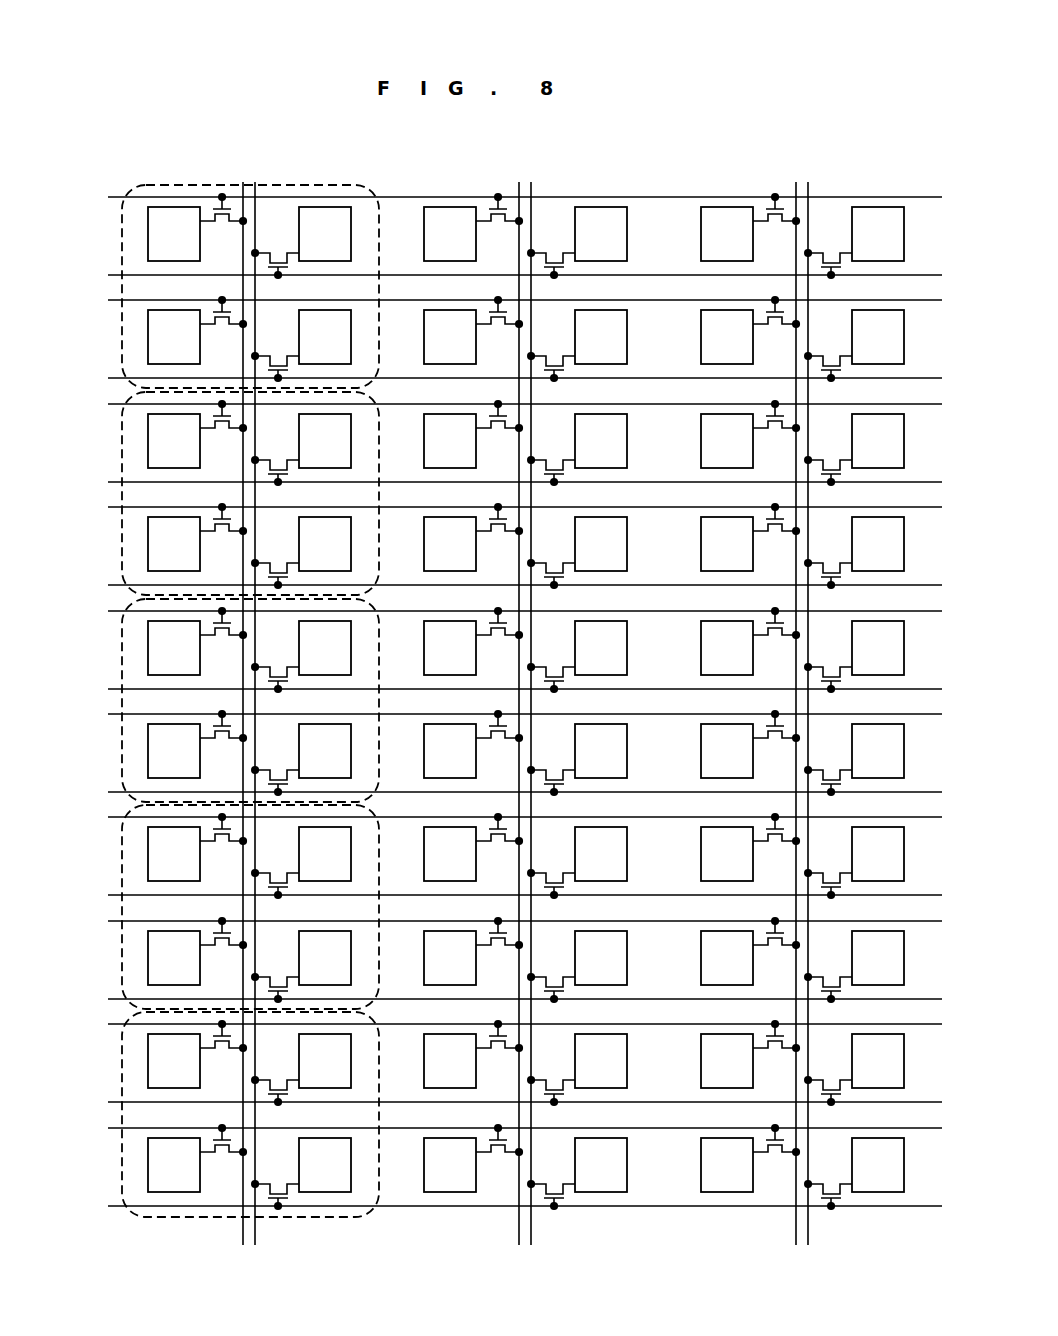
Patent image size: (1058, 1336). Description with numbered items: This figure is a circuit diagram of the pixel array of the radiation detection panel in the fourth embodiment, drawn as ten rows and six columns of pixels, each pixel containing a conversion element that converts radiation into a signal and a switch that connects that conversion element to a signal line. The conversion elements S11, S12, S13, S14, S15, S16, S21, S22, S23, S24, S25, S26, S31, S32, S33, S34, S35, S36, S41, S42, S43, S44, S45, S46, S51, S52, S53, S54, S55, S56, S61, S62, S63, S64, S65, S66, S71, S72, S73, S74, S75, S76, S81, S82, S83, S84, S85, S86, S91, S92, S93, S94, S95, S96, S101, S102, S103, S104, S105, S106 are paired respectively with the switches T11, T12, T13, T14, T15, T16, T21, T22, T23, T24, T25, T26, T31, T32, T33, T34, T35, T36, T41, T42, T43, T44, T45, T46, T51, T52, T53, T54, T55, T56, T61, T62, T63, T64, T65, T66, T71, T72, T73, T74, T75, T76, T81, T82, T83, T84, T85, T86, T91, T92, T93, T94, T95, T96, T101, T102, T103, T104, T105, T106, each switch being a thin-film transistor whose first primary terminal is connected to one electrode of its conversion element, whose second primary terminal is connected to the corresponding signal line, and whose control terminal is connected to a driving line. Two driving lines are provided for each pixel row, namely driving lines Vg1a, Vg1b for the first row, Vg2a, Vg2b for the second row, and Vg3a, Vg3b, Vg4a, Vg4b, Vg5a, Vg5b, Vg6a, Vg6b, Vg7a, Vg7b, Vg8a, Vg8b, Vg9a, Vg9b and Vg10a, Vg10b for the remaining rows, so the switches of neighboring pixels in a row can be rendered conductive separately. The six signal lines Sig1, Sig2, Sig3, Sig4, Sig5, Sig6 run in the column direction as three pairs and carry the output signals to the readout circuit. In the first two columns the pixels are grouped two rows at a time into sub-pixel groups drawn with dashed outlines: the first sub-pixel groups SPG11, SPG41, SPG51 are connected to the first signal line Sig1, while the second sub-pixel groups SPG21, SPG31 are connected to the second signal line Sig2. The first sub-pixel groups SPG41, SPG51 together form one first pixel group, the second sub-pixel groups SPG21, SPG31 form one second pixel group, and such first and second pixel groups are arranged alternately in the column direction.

The conversion element S11 is at (174, 234).
The conversion element S12 is at (325, 234).
The conversion element S13 is at (450, 234).
The conversion element S14 is at (601, 234).
The conversion element S15 is at (727, 234).
The conversion element S16 is at (878, 234).
The conversion element S21 is at (174, 337).
The conversion element S22 is at (325, 337).
The conversion element S23 is at (450, 337).
The conversion element S24 is at (601, 337).
The conversion element S25 is at (727, 337).
The conversion element S26 is at (878, 337).
The conversion element S31 is at (174, 441).
The conversion element S32 is at (325, 441).
The conversion element S33 is at (450, 441).
The conversion element S34 is at (601, 441).
The conversion element S35 is at (727, 441).
The conversion element S36 is at (878, 441).
The conversion element S41 is at (174, 544).
The conversion element S42 is at (325, 544).
The conversion element S43 is at (450, 544).
The conversion element S44 is at (601, 544).
The conversion element S45 is at (727, 544).
The conversion element S46 is at (878, 544).
The conversion element S51 is at (174, 648).
The conversion element S52 is at (325, 648).
The conversion element S53 is at (450, 648).
The conversion element S54 is at (601, 648).
The conversion element S55 is at (727, 648).
The conversion element S56 is at (878, 648).
The conversion element S61 is at (174, 751).
The conversion element S62 is at (325, 751).
The conversion element S63 is at (450, 751).
The conversion element S64 is at (601, 751).
The conversion element S65 is at (727, 751).
The conversion element S66 is at (878, 751).
The conversion element S71 is at (174, 854).
The conversion element S72 is at (325, 854).
The conversion element S73 is at (450, 854).
The conversion element S74 is at (601, 854).
The conversion element S75 is at (727, 854).
The conversion element S76 is at (878, 854).
The conversion element S81 is at (174, 958).
The conversion element S82 is at (325, 958).
The conversion element S83 is at (450, 958).
The conversion element S84 is at (601, 958).
The conversion element S85 is at (727, 958).
The conversion element S86 is at (878, 958).
The conversion element S91 is at (174, 1061).
The conversion element S92 is at (325, 1061).
The conversion element S93 is at (450, 1061).
The conversion element S94 is at (601, 1061).
The conversion element S95 is at (727, 1061).
The conversion element S96 is at (878, 1061).
The conversion element S101 is at (174, 1165).
The conversion element S102 is at (325, 1165).
The conversion element S103 is at (450, 1165).
The conversion element S104 is at (601, 1165).
The conversion element S105 is at (727, 1165).
The conversion element S106 is at (878, 1165).
The switch T11 is at (221, 223).
The switch T12 is at (277, 251).
The switch T13 is at (497, 223).
The switch T14 is at (553, 251).
The switch T15 is at (774, 223).
The switch T16 is at (830, 251).
The switch T21 is at (221, 326).
The switch T22 is at (277, 354).
The switch T23 is at (497, 326).
The switch T24 is at (553, 354).
The switch T25 is at (774, 326).
The switch T26 is at (830, 354).
The switch T31 is at (221, 430).
The switch T32 is at (277, 458).
The switch T33 is at (497, 430).
The switch T34 is at (553, 458).
The switch T35 is at (774, 430).
The switch T36 is at (830, 458).
The switch T41 is at (221, 533).
The switch T42 is at (277, 561).
The switch T43 is at (497, 533).
The switch T44 is at (553, 561).
The switch T45 is at (774, 533).
The switch T46 is at (830, 561).
The switch T51 is at (221, 637).
The switch T52 is at (277, 665).
The switch T53 is at (497, 637).
The switch T54 is at (553, 665).
The switch T55 is at (774, 637).
The switch T56 is at (830, 665).
The switch T61 is at (221, 740).
The switch T62 is at (277, 768).
The switch T63 is at (497, 740).
The switch T64 is at (553, 768).
The switch T65 is at (774, 740).
The switch T66 is at (830, 768).
The switch T71 is at (221, 843).
The switch T72 is at (277, 871).
The switch T73 is at (497, 843).
The switch T74 is at (553, 871).
The switch T75 is at (774, 843).
The switch T76 is at (830, 871).
The switch T81 is at (221, 947).
The switch T82 is at (277, 975).
The switch T83 is at (497, 947).
The switch T84 is at (553, 975).
The switch T85 is at (774, 947).
The switch T86 is at (830, 975).
The switch T91 is at (221, 1050).
The switch T92 is at (277, 1078).
The switch T93 is at (497, 1050).
The switch T94 is at (553, 1078).
The switch T95 is at (774, 1050).
The switch T96 is at (830, 1078).
The switch T101 is at (221, 1154).
The switch T102 is at (277, 1182).
The switch T103 is at (497, 1154).
The switch T104 is at (553, 1182).
The switch T105 is at (774, 1154).
The switch T106 is at (830, 1182).
The driving line Vg1a is at (496, 185).
The driving line Vg1b is at (496, 263).
The driving line Vg2a is at (496, 288).
The driving line Vg2b is at (496, 366).
The driving line Vg3a is at (496, 392).
The driving line Vg3b is at (496, 470).
The driving line Vg4a is at (496, 495).
The driving line Vg4b is at (496, 573).
The driving line Vg5a is at (496, 599).
The driving line Vg5b is at (496, 677).
The driving line Vg6a is at (496, 702).
The driving line Vg6b is at (496, 780).
The driving line Vg7a is at (496, 805).
The driving line Vg7b is at (496, 883).
The driving line Vg8a is at (496, 909).
The driving line Vg8b is at (496, 987).
The driving line Vg9a is at (496, 1012).
The driving line Vg9b is at (496, 1090).
The driving line Vg10a is at (490, 1116).
The driving line Vg10b is at (490, 1194).
The first signal line Sig1 is at (225, 728).
The second signal line Sig2 is at (273, 728).
The signal line Sig3 is at (501, 728).
The signal line Sig4 is at (549, 728).
The signal line Sig5 is at (778, 728).
The signal line Sig6 is at (826, 728).
The first sub-pixel group SPG11 is at (121, 226).
The second sub-pixel group SPG21 is at (121, 433).
The second sub-pixel group SPG31 is at (121, 640).
The first sub-pixel group SPG41 is at (121, 846).
The first sub-pixel group SPG51 is at (121, 1053).